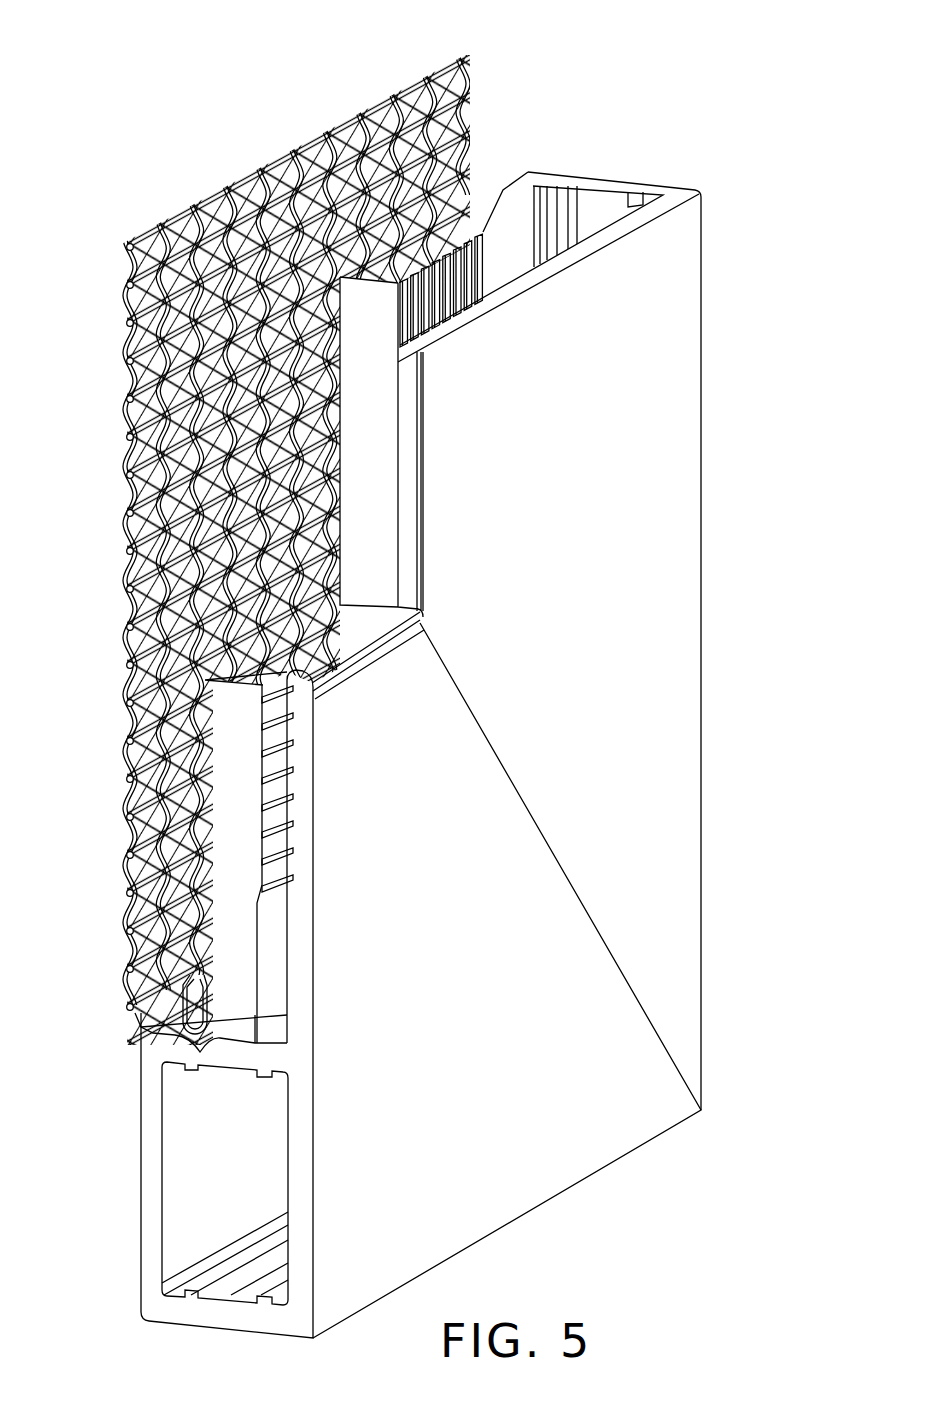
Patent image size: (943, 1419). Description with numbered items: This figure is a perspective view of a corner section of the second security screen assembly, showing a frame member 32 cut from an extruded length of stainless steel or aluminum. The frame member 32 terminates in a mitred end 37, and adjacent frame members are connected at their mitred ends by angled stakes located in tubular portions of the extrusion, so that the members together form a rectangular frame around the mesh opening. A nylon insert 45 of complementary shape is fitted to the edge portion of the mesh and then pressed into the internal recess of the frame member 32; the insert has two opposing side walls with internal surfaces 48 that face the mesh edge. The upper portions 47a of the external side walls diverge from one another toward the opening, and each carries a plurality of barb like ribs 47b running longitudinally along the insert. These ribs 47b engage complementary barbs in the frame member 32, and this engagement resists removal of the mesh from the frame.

The frame member 32 is at (675, 418).
The mitred end 37 is at (688, 942).
The insert 45 is at (230, 990).
The upper portions of the external side walls 47a is at (273, 793).
The barb like ribs 47b is at (273, 712).
The internal surfaces 48 is at (187, 852).